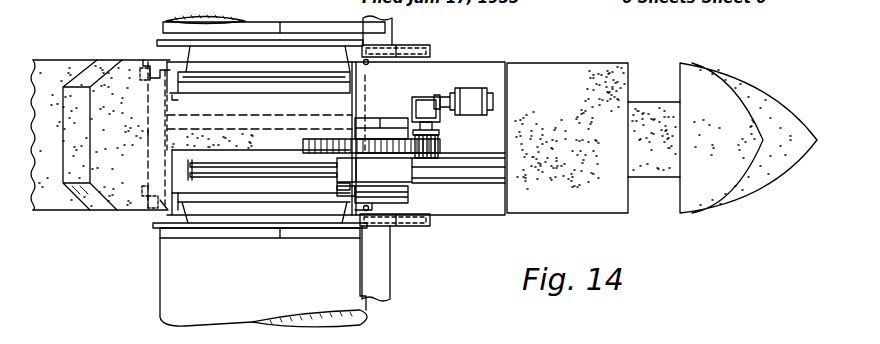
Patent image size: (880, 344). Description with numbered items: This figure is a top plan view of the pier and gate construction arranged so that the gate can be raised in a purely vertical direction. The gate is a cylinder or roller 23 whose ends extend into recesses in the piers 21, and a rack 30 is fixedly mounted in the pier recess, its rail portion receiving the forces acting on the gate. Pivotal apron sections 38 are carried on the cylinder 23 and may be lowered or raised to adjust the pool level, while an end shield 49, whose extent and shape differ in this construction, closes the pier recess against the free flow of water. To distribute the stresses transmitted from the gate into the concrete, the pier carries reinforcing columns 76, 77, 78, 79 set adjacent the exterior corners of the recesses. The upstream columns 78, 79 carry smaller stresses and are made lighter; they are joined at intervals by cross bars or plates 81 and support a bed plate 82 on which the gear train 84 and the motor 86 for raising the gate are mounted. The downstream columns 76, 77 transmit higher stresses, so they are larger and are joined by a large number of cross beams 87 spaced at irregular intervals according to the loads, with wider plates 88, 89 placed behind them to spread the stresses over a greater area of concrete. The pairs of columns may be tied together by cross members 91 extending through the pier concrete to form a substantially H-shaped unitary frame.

The piers 21 is at (587, 63).
The cylinder or roller 23 is at (167, 31).
The rack 30 is at (174, 200).
The pivotal apron sections 38 is at (393, 36).
The end shield 49 is at (420, 228).
The column 76 is at (156, 204).
The column 77 is at (158, 66).
The column 78 is at (340, 190).
The column 79 is at (353, 112).
The cross bars or plates 81 is at (366, 109).
The bed plate 82 is at (393, 128).
The gear train 84 is at (439, 119).
The motor 86 is at (473, 89).
The cross bars or cross beams 87 is at (149, 137).
The plate 88 is at (146, 191).
The plate 89 is at (146, 88).
The cross members 91 is at (235, 118).